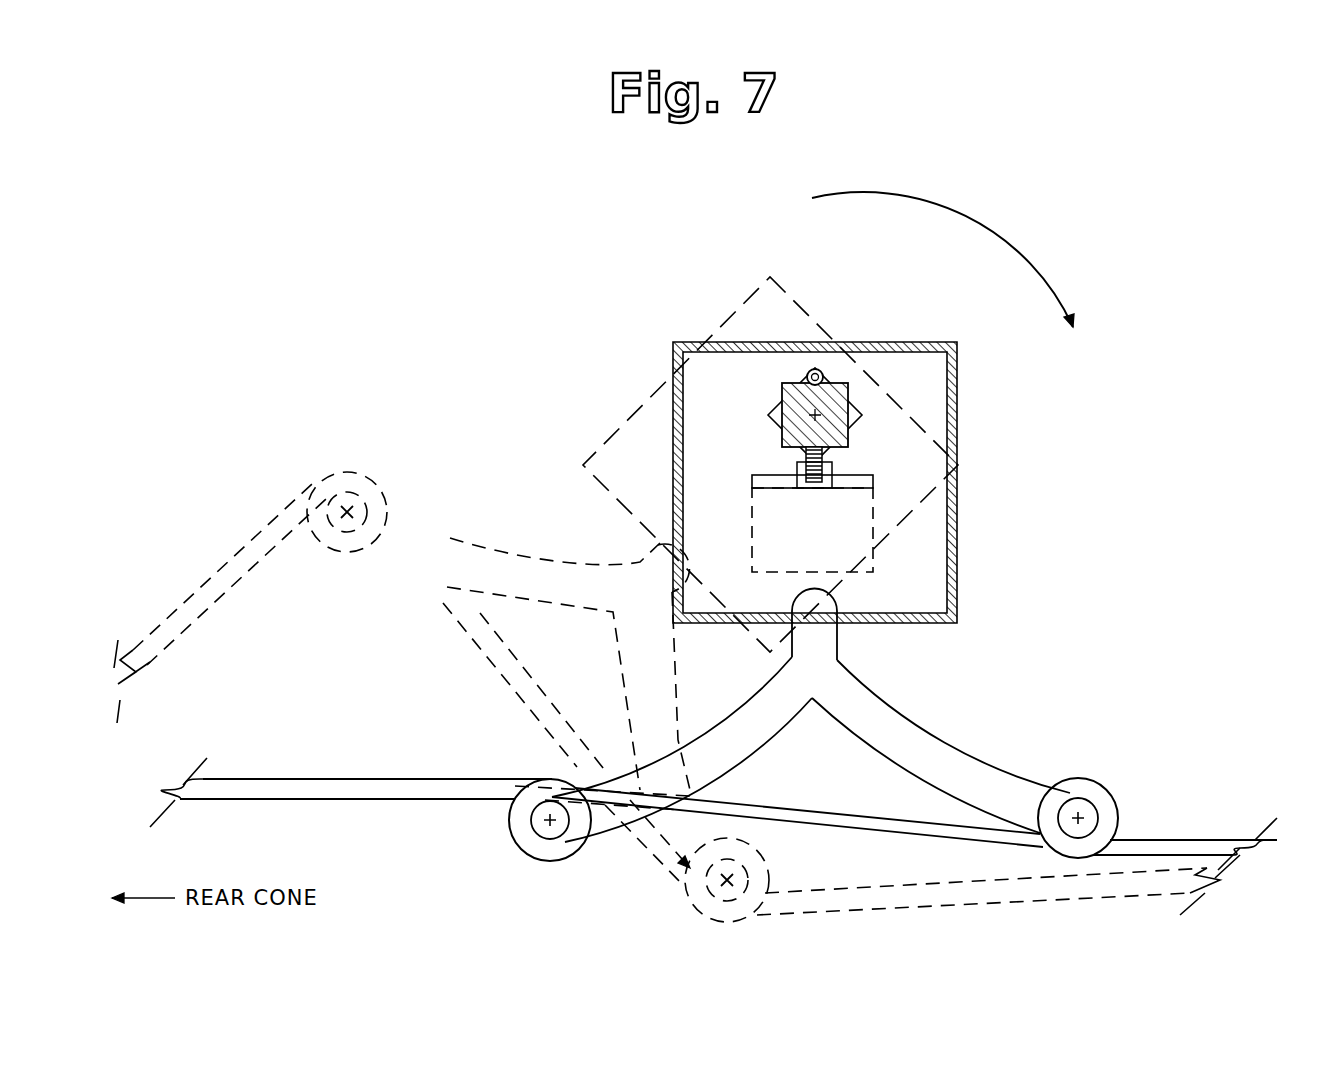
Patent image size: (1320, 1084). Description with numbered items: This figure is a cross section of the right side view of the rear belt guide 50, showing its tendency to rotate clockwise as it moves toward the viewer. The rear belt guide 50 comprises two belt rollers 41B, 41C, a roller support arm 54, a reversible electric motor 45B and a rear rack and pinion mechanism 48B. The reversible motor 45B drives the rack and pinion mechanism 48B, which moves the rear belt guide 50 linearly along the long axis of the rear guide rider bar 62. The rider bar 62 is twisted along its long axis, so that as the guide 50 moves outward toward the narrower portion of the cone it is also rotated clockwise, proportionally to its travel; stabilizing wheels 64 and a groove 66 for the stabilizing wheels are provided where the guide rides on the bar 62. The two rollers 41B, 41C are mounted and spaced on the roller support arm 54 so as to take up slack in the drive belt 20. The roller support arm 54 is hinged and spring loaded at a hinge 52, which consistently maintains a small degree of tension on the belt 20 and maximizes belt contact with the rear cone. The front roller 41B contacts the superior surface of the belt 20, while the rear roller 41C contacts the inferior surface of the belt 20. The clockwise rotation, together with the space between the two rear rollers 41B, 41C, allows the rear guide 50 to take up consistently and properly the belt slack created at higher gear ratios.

The drive belt 20 is at (1186, 840).
The front belt roller of rear guide 41B is at (1088, 784).
The rear belt roller of rear guide 41C is at (528, 840).
The reversible motor of rear guide 45B is at (852, 537).
The rear rack and pinion mechanism 48B is at (838, 454).
The rear belt guide 50 is at (650, 348).
The pivot 52 is at (814, 607).
The roller support arm 54 is at (934, 748).
The rear guide rider bar 62 is at (860, 410).
The stabilizing wheels 64 is at (816, 378).
The groove for stabilizing wheels 66 is at (826, 384).